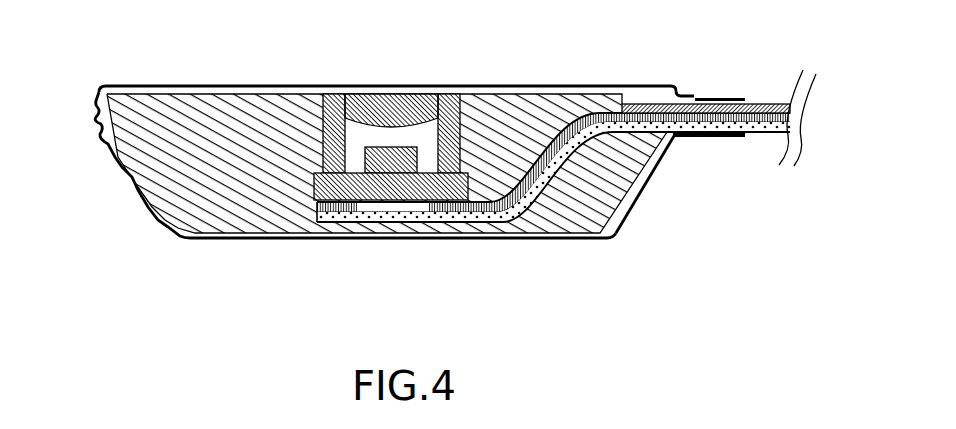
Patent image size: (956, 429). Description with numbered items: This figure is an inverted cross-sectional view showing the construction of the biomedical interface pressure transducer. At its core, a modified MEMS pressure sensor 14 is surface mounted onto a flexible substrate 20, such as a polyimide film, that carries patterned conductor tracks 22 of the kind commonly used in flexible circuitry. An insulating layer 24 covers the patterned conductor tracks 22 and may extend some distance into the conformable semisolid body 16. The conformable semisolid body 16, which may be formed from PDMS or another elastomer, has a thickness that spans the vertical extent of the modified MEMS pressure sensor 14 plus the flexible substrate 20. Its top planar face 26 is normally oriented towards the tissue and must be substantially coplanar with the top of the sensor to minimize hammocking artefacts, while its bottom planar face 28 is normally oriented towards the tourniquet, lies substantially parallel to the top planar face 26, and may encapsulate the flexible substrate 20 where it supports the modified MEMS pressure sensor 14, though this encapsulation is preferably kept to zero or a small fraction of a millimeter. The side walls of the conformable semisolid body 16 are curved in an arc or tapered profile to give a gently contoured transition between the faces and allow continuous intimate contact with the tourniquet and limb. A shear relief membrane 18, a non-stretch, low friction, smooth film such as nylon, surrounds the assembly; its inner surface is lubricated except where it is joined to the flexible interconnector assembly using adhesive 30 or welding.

The modified MEMS pressure sensor 14 is at (476, 102).
The conformable semisolid body 16 is at (209, 148).
The shear relief membrane 18 is at (134, 181).
The flexible substrate 20 is at (346, 214).
The patterned conductor tracks 22 is at (315, 207).
The insulating layer 24 is at (640, 103).
The top planar face 26 is at (173, 95).
The bottom planar face 28 is at (253, 238).
The adhesive 30 is at (745, 100).